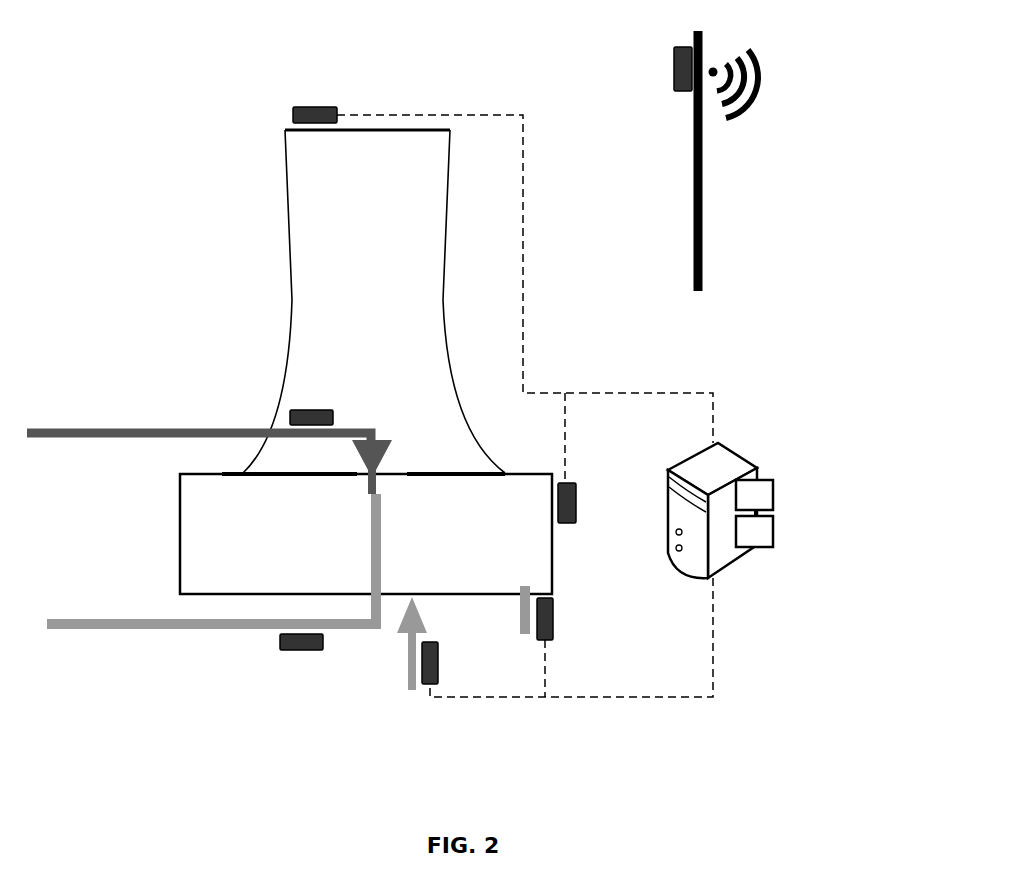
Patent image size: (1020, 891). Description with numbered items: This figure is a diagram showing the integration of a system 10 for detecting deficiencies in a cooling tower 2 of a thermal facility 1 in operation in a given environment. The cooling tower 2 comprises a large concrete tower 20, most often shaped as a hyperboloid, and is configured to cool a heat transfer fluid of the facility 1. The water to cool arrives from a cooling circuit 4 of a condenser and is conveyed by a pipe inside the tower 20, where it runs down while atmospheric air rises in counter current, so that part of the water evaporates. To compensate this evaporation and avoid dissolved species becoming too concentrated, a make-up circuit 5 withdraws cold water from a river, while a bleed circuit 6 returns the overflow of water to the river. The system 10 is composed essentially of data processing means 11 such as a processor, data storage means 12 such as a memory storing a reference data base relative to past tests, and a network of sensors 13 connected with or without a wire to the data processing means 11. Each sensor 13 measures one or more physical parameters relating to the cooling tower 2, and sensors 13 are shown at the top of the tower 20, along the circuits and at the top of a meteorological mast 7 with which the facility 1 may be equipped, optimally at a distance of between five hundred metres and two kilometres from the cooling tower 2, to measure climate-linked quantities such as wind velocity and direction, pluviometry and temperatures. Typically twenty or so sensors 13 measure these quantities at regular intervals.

The thermal facility 1 is at (122, 76).
The cooling tower 2 is at (262, 342).
The cooling circuit 4 is at (128, 422).
The make-up circuit 5 is at (401, 645).
The bleed circuit 6 is at (519, 601).
The meteorological mast 7 is at (705, 147).
The system 10 is at (753, 452).
The data processing means 11 is at (778, 495).
The data storage means 12 is at (779, 534).
The sensors 13 is at (319, 106).
The tower 20 is at (332, 212).